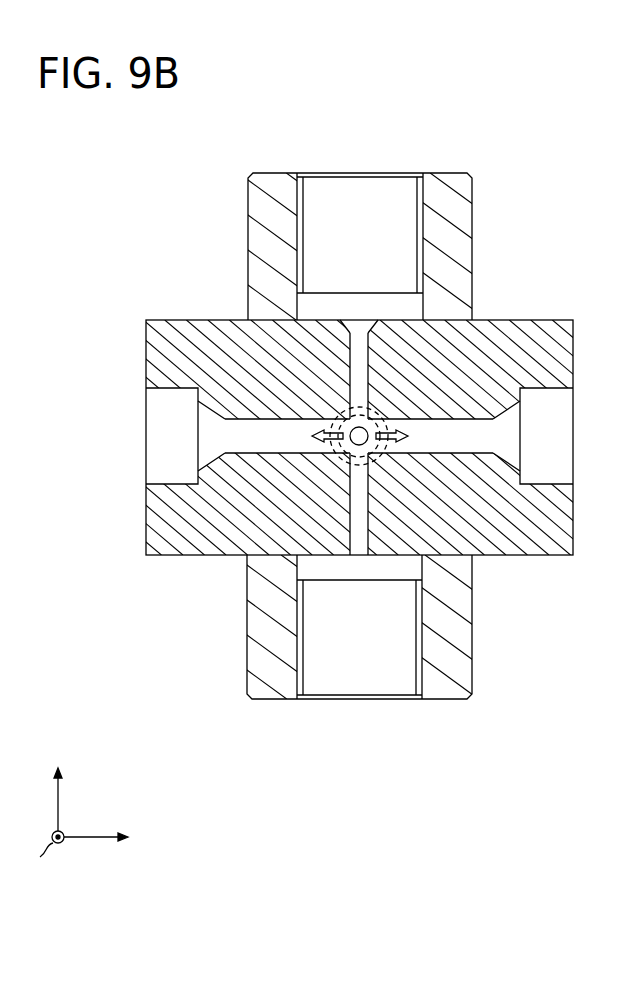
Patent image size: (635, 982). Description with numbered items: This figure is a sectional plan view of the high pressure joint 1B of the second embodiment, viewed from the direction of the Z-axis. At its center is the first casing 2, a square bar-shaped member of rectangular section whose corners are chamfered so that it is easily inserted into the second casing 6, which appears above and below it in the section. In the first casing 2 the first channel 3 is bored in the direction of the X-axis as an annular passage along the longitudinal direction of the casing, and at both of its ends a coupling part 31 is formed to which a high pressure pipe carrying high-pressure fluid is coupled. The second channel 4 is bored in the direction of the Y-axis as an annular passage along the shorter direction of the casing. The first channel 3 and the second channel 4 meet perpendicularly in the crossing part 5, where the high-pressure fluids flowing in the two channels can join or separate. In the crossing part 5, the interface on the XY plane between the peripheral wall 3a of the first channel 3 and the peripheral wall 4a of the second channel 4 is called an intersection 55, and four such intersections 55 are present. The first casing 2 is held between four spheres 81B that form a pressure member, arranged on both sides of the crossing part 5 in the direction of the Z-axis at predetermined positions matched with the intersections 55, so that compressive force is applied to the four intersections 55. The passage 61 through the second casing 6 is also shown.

The high pressure joint 1B is at (534, 110).
The first casing 2 is at (521, 320).
The first channel 3 is at (238, 442).
The peripheral wall of the first channel 3a is at (223, 428).
The second channel 4 is at (366, 350).
The peripheral wall of the second channel 4a is at (362, 337).
The crossing part 5 is at (341, 451).
The second casing 6 is at (248, 201).
The coupling part 31 is at (172, 387).
The intersection 55 is at (340, 417).
The through hole 61 is at (318, 178).
The sphere 81B is at (358, 436).